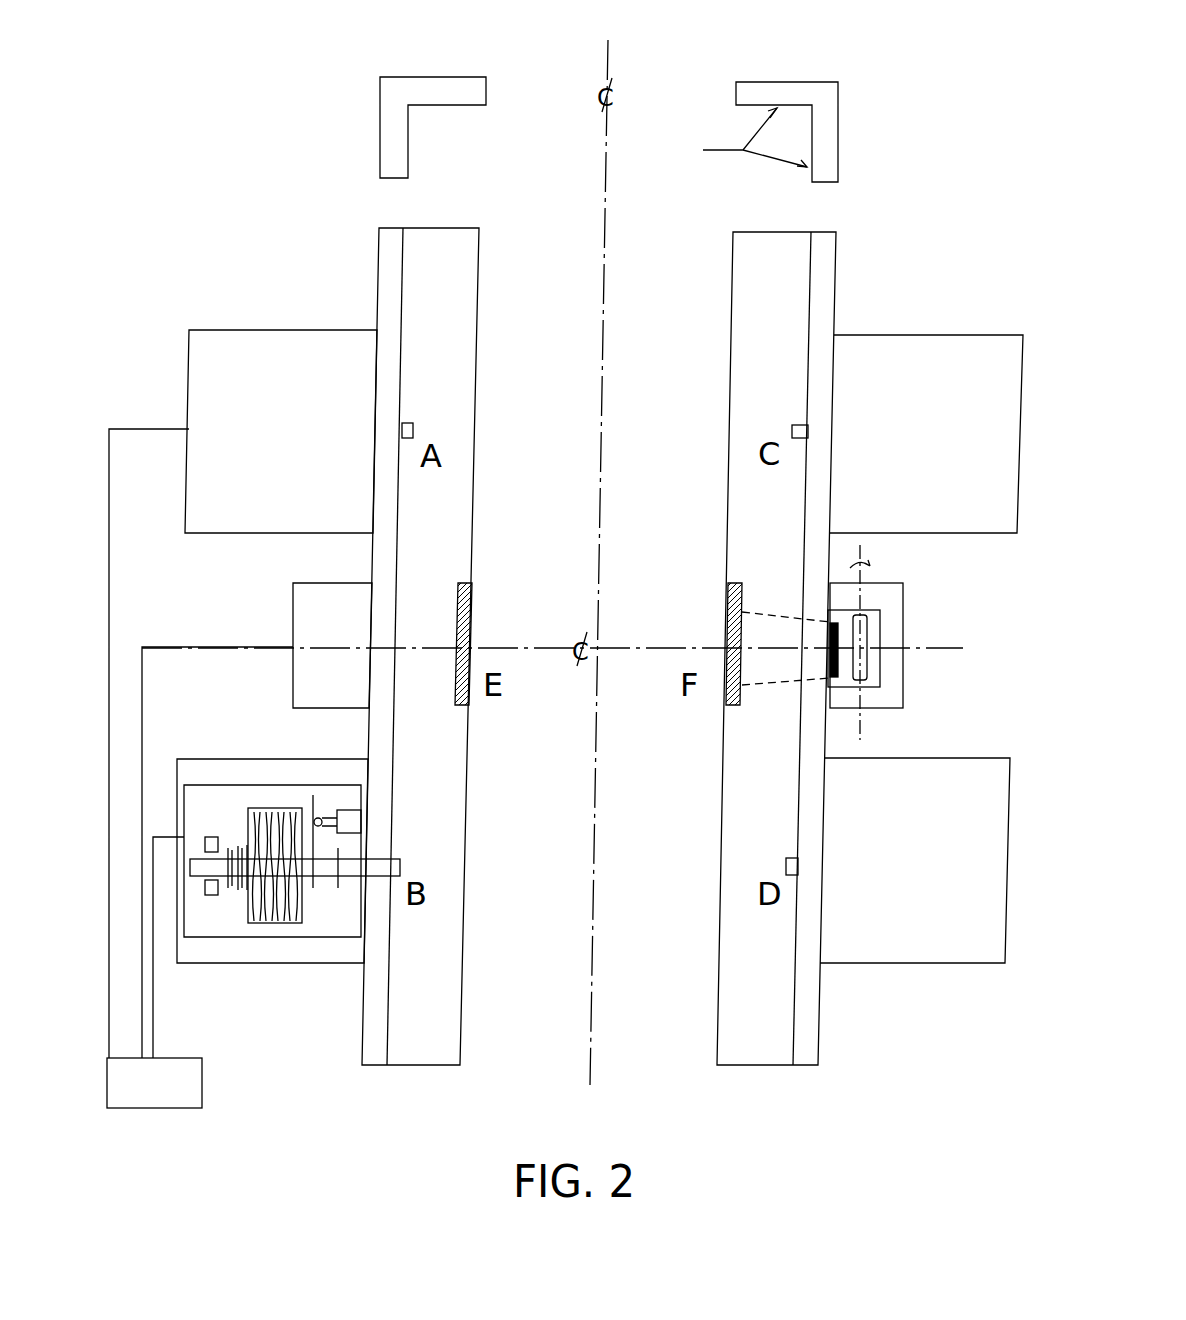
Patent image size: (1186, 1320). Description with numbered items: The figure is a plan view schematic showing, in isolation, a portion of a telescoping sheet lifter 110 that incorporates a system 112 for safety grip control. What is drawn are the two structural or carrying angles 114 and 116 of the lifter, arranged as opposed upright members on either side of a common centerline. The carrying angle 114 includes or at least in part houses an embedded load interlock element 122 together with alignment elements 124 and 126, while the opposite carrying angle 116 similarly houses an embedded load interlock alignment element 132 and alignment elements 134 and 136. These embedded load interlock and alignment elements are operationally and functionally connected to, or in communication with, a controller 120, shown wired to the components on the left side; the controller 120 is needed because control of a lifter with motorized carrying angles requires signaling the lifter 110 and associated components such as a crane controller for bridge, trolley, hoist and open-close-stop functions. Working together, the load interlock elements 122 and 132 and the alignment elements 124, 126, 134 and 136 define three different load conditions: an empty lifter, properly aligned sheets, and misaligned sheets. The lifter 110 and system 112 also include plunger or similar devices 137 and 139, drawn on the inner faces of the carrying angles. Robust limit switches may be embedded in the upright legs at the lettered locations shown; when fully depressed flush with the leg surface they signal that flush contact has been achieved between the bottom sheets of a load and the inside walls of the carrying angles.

The telescoping sheet lifter 110 is at (902, 157).
The system for safety grip control 112 is at (922, 320).
The carrying angle 114 is at (460, 219).
The carrying angle 116 is at (751, 221).
The controller 120 is at (154, 1083).
The embedded load interlock element 122 is at (307, 623).
The alignment element 124 is at (245, 963).
The alignment element 126 is at (241, 330).
The embedded load interlock alignment element 132 is at (890, 597).
The alignment element 134 is at (925, 758).
The alignment element 136 is at (947, 330).
The plunger device 137 is at (424, 417).
The plunger device 139 is at (482, 597).